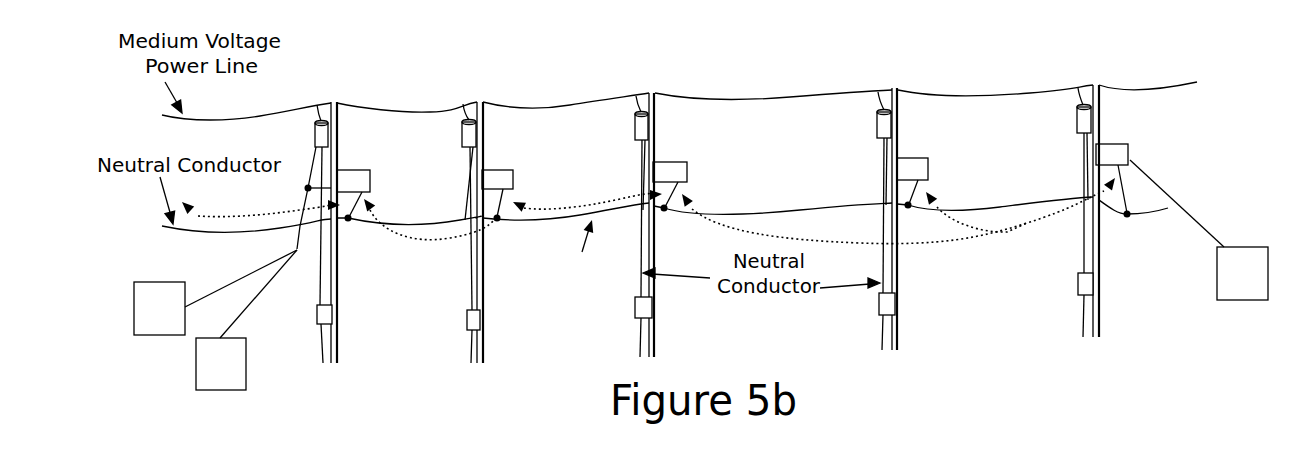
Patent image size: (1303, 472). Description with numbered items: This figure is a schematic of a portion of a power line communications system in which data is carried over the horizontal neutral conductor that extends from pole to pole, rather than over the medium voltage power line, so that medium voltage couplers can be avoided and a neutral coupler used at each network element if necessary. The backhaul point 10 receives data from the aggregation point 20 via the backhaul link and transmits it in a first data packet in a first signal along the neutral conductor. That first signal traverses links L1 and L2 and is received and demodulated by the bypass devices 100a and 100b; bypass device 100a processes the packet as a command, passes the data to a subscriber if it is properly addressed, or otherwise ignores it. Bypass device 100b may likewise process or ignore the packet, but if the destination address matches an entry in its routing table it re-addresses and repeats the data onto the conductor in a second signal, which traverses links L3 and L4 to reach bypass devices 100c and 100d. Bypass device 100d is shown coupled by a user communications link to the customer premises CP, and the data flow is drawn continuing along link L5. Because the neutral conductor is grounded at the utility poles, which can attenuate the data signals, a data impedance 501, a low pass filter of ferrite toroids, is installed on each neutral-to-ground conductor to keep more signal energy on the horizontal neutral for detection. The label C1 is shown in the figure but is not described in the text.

The backhaul point 10 is at (1124, 143).
The aggregation point 20 is at (1199, 230).
The bypass device 100a is at (929, 168).
The bypass device 100b is at (688, 169).
The bypass device 100c is at (514, 177).
The bypass device 100d is at (371, 180).
The data impedance 501 is at (320, 313).
The customer premises CP is at (215, 320).
The link L1 is at (982, 199).
The link L2 is at (898, 217).
The link L3 is at (588, 196).
The link L4 is at (433, 241).
The link L5 is at (264, 203).
The neutral conductor link C1 is at (573, 249).